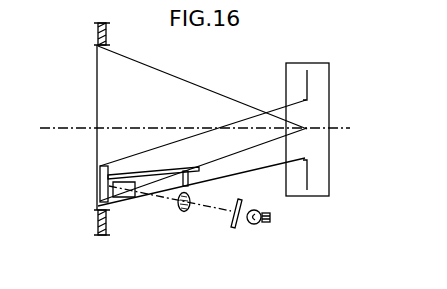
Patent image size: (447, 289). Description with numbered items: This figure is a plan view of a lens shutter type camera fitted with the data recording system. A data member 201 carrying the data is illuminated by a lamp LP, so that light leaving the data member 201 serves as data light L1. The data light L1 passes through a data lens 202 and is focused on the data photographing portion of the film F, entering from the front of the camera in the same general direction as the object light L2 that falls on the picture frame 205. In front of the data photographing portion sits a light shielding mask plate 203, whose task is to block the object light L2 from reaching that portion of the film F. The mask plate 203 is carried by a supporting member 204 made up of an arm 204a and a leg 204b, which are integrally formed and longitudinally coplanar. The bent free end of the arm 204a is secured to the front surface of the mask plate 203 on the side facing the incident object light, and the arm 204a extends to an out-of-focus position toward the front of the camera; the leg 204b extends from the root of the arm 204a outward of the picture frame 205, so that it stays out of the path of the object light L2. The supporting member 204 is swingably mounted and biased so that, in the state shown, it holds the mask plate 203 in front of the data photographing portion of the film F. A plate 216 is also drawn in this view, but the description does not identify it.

The picture frame 205 is at (97, 48).
The light shielding mask plate 203 is at (100, 178).
The supporting member 204 is at (155, 171).
The arm 204a is at (134, 197).
The leg 204b is at (180, 149).
The data lens 202 is at (178, 207).
The data member 201 is at (239, 229).
The aperture plate 216 is at (309, 72).
The film F is at (97, 135).
The data light L1 is at (190, 212).
The object light L2 is at (187, 81).
The lamp LP is at (258, 224).